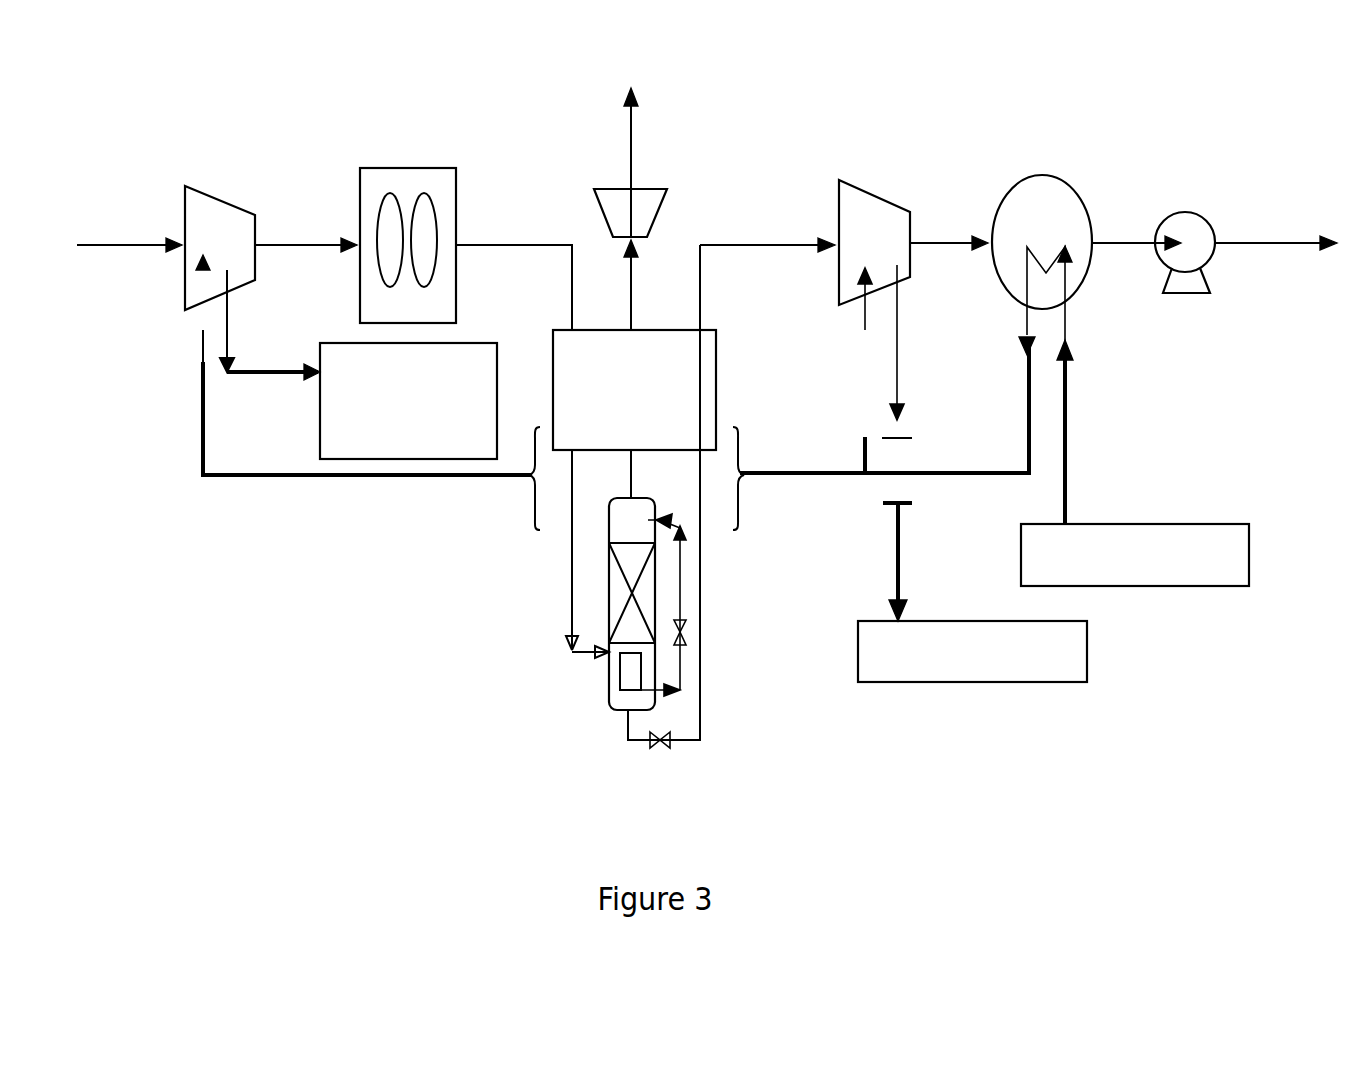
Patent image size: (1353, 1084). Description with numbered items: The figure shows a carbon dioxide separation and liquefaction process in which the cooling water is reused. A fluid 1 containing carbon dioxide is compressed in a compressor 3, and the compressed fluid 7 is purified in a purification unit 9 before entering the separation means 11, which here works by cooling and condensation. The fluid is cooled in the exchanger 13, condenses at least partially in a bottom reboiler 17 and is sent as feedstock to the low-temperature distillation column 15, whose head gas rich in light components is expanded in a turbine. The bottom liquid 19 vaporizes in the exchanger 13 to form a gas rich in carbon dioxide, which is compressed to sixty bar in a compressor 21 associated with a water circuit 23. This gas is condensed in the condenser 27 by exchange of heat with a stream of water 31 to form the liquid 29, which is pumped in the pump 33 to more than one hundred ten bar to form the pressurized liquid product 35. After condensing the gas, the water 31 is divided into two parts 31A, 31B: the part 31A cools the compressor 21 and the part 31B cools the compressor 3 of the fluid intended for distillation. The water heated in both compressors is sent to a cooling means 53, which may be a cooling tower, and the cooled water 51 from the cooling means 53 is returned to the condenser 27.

The fluid containing carbon dioxide 1 is at (95, 245).
The compressor 3 is at (212, 232).
The compressed fluid 7 is at (305, 245).
The purification unit 9 is at (425, 180).
The separation means 11 is at (448, 604).
The exchanger 13 is at (553, 347).
The low-temperature distillation column 15 is at (609, 580).
The bottom reboiler 17 is at (632, 673).
The bottom liquid 19 is at (703, 710).
The compressor 21 is at (631, 308).
The water circuit 23 is at (645, 196).
The condenser 27 is at (1043, 190).
The liquid 29 is at (1122, 243).
The water 31 is at (1068, 492).
The part of the water 31A is at (865, 425).
The part of the water 31B is at (400, 478).
The pump 33 is at (1187, 225).
The pressurized liquid product 35 is at (1265, 245).
The cooled water 51 is at (1228, 550).
The cooling means 53 is at (333, 365).